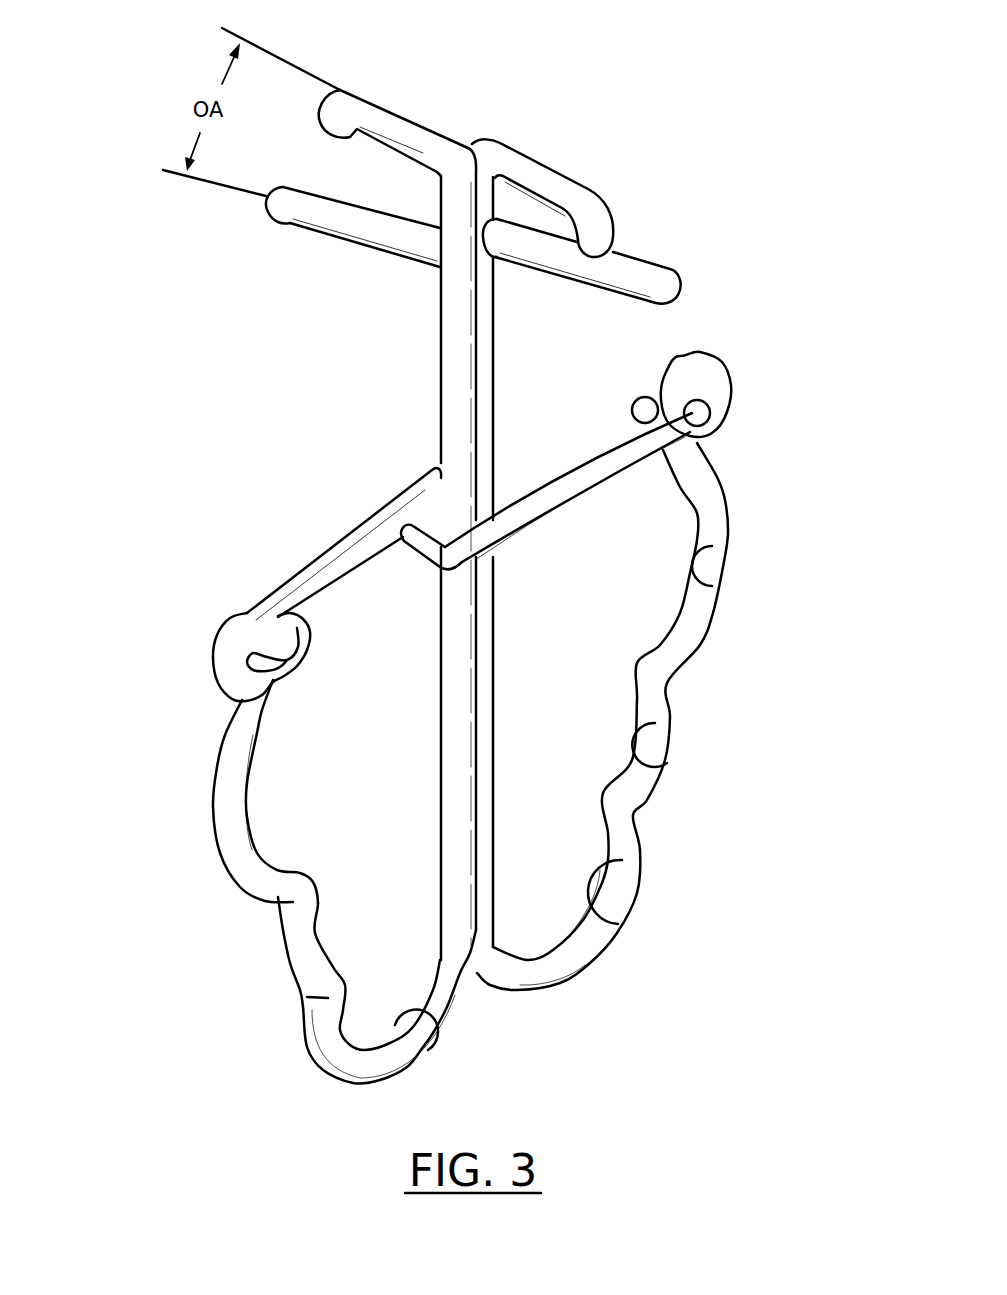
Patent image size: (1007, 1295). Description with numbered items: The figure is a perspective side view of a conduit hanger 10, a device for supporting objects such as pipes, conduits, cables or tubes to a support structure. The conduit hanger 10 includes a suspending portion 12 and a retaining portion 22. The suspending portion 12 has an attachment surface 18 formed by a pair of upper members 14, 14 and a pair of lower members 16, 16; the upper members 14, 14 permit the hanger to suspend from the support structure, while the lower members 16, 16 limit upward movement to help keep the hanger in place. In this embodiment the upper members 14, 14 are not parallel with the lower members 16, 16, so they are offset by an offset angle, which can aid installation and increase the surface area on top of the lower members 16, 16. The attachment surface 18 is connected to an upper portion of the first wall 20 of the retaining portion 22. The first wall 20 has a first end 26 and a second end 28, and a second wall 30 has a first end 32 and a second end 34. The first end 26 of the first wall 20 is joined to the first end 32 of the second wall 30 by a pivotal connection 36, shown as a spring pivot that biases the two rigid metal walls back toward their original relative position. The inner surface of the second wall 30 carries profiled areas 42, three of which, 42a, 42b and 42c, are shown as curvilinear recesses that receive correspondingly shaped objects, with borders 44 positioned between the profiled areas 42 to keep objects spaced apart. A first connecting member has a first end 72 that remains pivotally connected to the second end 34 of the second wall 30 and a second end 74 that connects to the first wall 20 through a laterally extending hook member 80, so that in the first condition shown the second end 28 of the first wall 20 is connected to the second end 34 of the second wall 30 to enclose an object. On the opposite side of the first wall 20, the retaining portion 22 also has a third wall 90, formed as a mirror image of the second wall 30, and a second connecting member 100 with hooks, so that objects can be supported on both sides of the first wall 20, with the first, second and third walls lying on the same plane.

The conduit hanger 10 is at (726, 139).
The suspending portion 12 is at (248, 362).
The upper members 14 is at (388, 107).
The lower members 16 is at (306, 227).
The attachment surface 18 is at (458, 157).
The first wall 20 is at (490, 592).
The retaining portion 22 is at (198, 751).
The first end of first wall 26 is at (510, 977).
The second end of first wall 28 is at (441, 337).
The second wall 30 is at (719, 511).
The first end of second wall 32 is at (580, 947).
The second end of second wall 34 is at (703, 363).
The pivotal connection 36 is at (557, 960).
The profiled areas 42 is at (288, 703).
The first profiled area 42a is at (684, 582).
The second profiled area 42b is at (667, 760).
The third profiled area 42c is at (612, 920).
The borders 44 is at (643, 672).
The first end of first connecting member 72 is at (692, 418).
The second end of first connecting member 74 is at (445, 558).
The hook member 80 is at (408, 537).
The third wall 90 is at (233, 855).
The second connecting member 100 is at (353, 538).